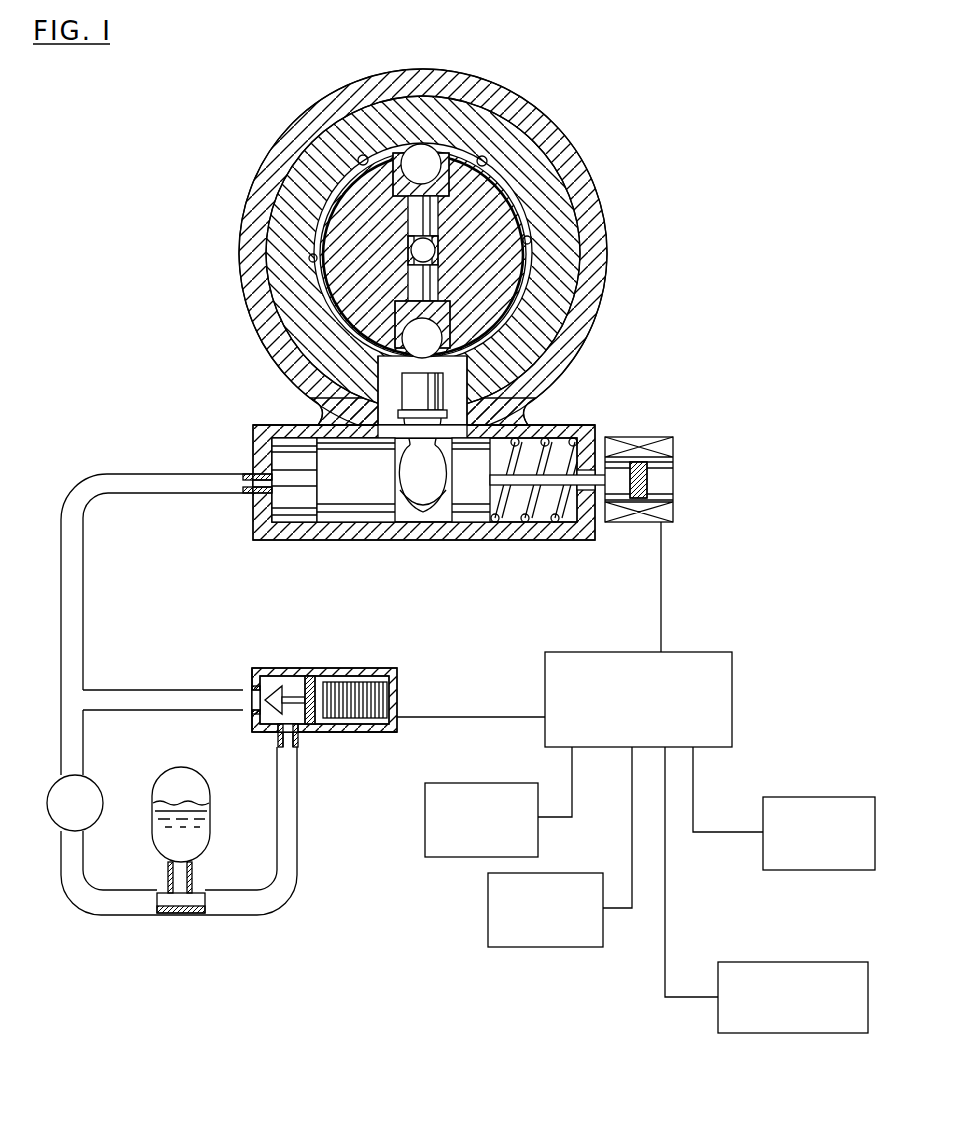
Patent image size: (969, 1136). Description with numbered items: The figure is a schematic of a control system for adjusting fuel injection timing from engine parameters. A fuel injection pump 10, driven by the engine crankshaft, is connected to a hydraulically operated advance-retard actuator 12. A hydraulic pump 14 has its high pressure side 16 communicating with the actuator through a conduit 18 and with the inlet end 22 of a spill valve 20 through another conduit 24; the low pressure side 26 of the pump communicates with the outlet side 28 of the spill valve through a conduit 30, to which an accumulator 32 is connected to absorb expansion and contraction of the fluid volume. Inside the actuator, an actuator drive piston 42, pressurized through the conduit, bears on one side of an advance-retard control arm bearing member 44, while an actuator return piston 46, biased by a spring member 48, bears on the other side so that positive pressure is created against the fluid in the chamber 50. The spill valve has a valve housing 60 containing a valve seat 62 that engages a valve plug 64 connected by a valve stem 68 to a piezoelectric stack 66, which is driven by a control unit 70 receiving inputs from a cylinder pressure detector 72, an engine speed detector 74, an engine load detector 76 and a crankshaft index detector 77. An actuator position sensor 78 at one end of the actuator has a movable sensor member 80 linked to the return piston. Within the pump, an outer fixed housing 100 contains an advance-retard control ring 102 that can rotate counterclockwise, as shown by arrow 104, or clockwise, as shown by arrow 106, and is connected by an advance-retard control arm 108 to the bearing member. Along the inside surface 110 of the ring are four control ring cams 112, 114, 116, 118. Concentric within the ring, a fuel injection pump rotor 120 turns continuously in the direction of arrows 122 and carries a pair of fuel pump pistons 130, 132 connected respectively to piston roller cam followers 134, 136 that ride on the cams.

The fuel injection pump 10 is at (257, 122).
The advance-retard actuator 12 is at (258, 551).
The hydraulic pump 14 is at (47, 803).
The high pressure side 16 is at (62, 772).
The conduit 18 is at (84, 598).
The spill valve 20 is at (322, 663).
The inlet end 22 is at (247, 715).
The conduit 24 is at (134, 693).
The low pressure side 26 is at (62, 832).
The outlet side 28 is at (303, 733).
The conduit 30 is at (299, 860).
The accumulator 32 is at (207, 783).
The actuator drive piston 42 is at (362, 494).
The advance-retard control arm bearing member 44 is at (434, 494).
The actuator return piston 46 is at (484, 494).
The spring member 48 is at (553, 515).
The chamber 50 is at (305, 494).
The valve housing 60 is at (393, 669).
The valve seat 62 is at (263, 690).
The valve plug 64 is at (276, 671).
The piezoelectric stack 66 is at (384, 697).
The valve stem 68 is at (303, 698).
The control unit 70 is at (679, 726).
The cylinder pressure detector 72 is at (812, 797).
The engine speed detector 74 is at (477, 784).
The engine load detector 76 is at (488, 908).
The crankshaft index detector 77 is at (775, 962).
The actuator position sensor 78 is at (683, 471).
The movable sensor member 80 is at (642, 482).
The outer fixed housing 100 is at (598, 221).
The advance-retard control ring 102 is at (562, 278).
The arrow 104 is at (448, 397).
The arrow 106 is at (397, 395).
The advance-retard control arm 108 is at (440, 431).
The inside surface 110 is at (309, 257).
The advance-retard control ring cam 112 is at (488, 160).
The advance-retard control ring cam 114 is at (360, 156).
The advance-retard control ring cam 116 is at (420, 254).
The advance-retard control ring cam 118 is at (487, 330).
The fuel injection pump rotor 120 is at (481, 255).
The arrows 122 is at (337, 234).
The fuel pump piston 130 is at (435, 286).
The fuel pump piston 132 is at (433, 223).
The piston roller cam follower 134 is at (431, 334).
The piston roller cam follower 136 is at (440, 185).